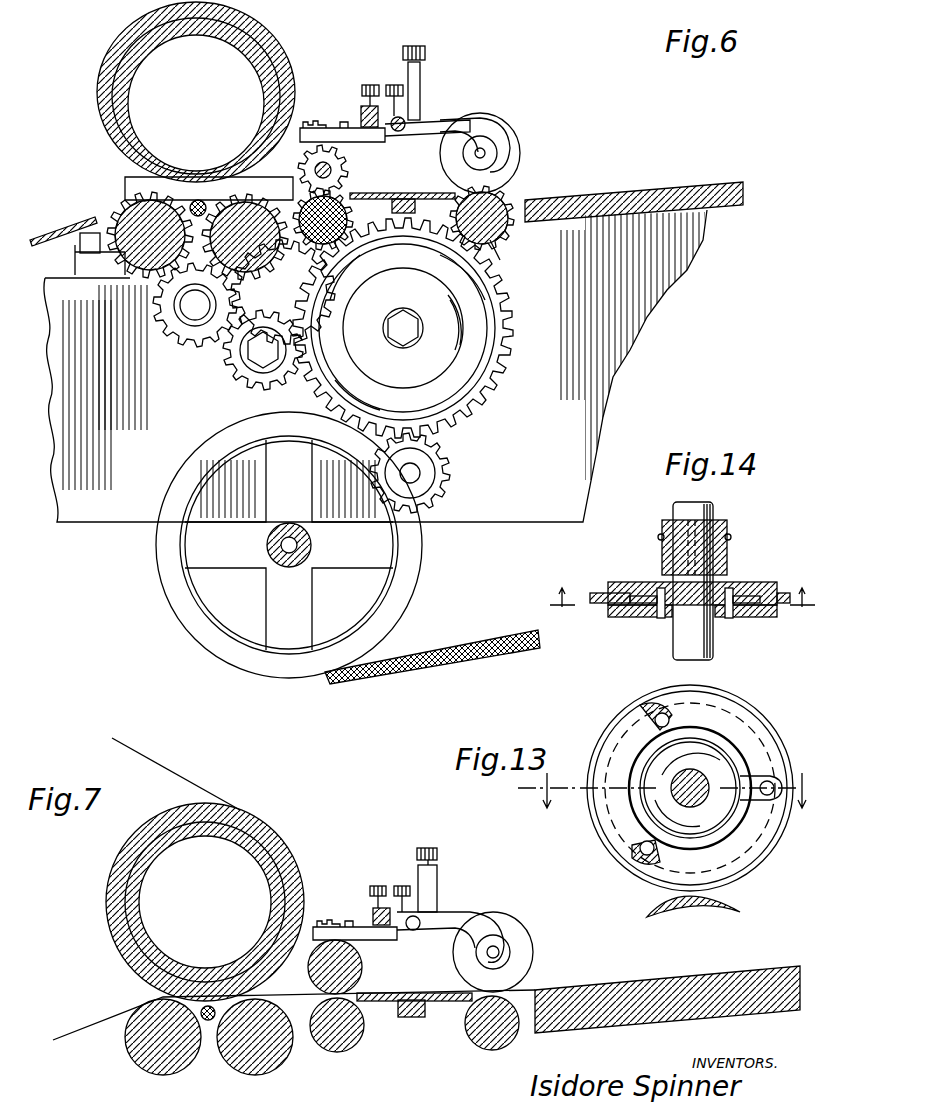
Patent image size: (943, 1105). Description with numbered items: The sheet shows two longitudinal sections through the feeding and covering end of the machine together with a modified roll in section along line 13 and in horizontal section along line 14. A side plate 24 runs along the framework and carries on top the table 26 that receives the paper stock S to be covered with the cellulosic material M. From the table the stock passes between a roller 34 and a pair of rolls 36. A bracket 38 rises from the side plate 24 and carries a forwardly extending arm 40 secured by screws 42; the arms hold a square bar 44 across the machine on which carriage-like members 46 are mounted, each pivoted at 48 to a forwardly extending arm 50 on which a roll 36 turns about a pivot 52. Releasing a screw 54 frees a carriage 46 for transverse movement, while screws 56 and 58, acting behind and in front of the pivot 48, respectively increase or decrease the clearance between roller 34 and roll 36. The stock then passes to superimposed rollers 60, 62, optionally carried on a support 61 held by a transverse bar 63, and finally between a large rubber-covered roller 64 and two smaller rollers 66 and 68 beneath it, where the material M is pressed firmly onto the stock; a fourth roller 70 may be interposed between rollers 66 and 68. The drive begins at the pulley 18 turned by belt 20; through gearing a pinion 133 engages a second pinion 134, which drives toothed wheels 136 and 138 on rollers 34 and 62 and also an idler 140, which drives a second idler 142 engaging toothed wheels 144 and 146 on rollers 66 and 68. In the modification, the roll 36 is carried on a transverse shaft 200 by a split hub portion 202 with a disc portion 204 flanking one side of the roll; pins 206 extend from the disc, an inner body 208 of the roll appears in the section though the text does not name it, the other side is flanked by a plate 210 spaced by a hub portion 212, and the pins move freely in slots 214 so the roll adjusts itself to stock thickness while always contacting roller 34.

In FIG. 6, the pulley 18 is at (410, 545).
In FIG. 6, the belt 20 is at (445, 648).
In FIG. 6, the side plate 24 is at (600, 405).
In FIG. 6, the table 26 is at (683, 182).
In FIG. 7, the table 26 is at (725, 975).
In FIG. 6, the roller 34 is at (540, 272).
In FIG. 7, the roller 34 is at (512, 1040).
In FIG. 13, the roller 34 is at (740, 905).
In FIG. 6, the roll 36 is at (515, 135).
In FIG. 7, the roll 36 is at (525, 935).
In FIG. 14, the roll 36 is at (598, 593).
In FIG. 13, the roll 36 is at (758, 710).
In FIG. 6, the bracket 38 is at (350, 152).
In FIG. 6, the arm 40 is at (343, 125).
In FIG. 6, the screw 42 is at (336, 125).
In FIG. 7, the screw 42 is at (368, 925).
In FIG. 6, the square bar 44 is at (360, 105).
In FIG. 6, the carriage-like member 46 is at (430, 118).
In FIG. 6, the pivot 48 is at (400, 135).
In FIG. 6, the arm 50 is at (450, 115).
In FIG. 6, the pivot 52 is at (486, 156).
In FIG. 6, the screw 54 is at (372, 84).
In FIG. 7, the screw 54 is at (375, 886).
In FIG. 6, the screw 56 is at (400, 90).
In FIG. 6, the screw 58 is at (414, 46).
In FIG. 7, the screw 58 is at (440, 860).
In FIG. 7, the roller 60 is at (362, 963).
In FIG. 7, the support 61 is at (445, 1003).
In FIG. 6, the roller 62 is at (397, 193).
In FIG. 7, the roller 62 is at (350, 1042).
In FIG. 7, the bar 63 is at (408, 1018).
In FIG. 6, the roller 64 is at (100, 80).
In FIG. 7, the roller 64 is at (285, 848).
In FIG. 6, the roller 66 is at (283, 292).
In FIG. 7, the roller 66 is at (280, 1068).
In FIG. 6, the roller 68 is at (140, 228).
In FIG. 7, the roller 68 is at (163, 1050).
In FIG. 7, the roller 70 is at (208, 1020).
In FIG. 6, the pinion 133 is at (440, 445).
In FIG. 6, the pinion 134 is at (385, 380).
In FIG. 6, the toothed wheel 136 is at (510, 200).
In FIG. 6, the toothed wheel 138 is at (440, 250).
In FIG. 6, the idler 140 is at (235, 378).
In FIG. 6, the idler 142 is at (180, 340).
In FIG. 6, the toothed wheel 144 is at (230, 195).
In FIG. 6, the toothed wheel 146 is at (130, 205).
In FIG. 14, the shaft 200 is at (713, 512).
In FIG. 13, the shaft 200 is at (705, 760).
In FIG. 14, the split hub portion 202 is at (727, 548).
In FIG. 14, the disc portion 204 is at (635, 582).
In FIG. 14, the pin 206 is at (780, 603).
In FIG. 13, the pin 206 is at (655, 713).
In FIG. 13, the cam plate 208 is at (685, 774).
In FIG. 14, the plate 210 is at (637, 617).
In FIG. 14, the hub portion 212 is at (730, 618).
In FIG. 14, the slot 214 is at (732, 590).
In FIG. 13, the slot 214 is at (760, 770).
In FIG. 14, the section line 13— 13 is at (683, 608).
In FIG. 13, the section line 14— 14 is at (666, 804).
In FIG. 7, the cellulosic material M is at (190, 775).
In FIG. 7, the stock S is at (580, 990).